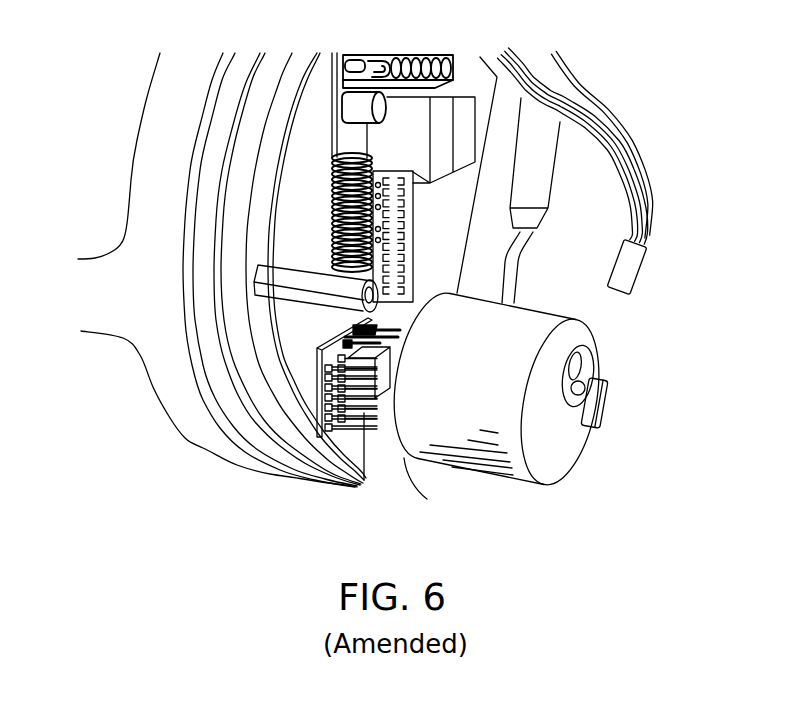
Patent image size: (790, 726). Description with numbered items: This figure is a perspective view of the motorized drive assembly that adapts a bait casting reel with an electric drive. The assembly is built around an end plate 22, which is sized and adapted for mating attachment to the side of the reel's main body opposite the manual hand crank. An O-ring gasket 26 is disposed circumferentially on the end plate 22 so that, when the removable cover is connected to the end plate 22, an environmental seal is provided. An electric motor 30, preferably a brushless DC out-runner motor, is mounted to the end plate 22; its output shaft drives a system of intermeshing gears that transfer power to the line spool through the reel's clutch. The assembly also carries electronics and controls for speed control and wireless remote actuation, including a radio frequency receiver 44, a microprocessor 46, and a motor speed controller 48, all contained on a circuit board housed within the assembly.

The end plate 22 is at (225, 448).
The O-ring gasket 26 is at (268, 455).
The electric motor 30 is at (545, 473).
The radio frequency (RF) receiver 44 is at (402, 235).
The microprocessor 46 is at (377, 382).
The motor speed controller 48 is at (552, 195).